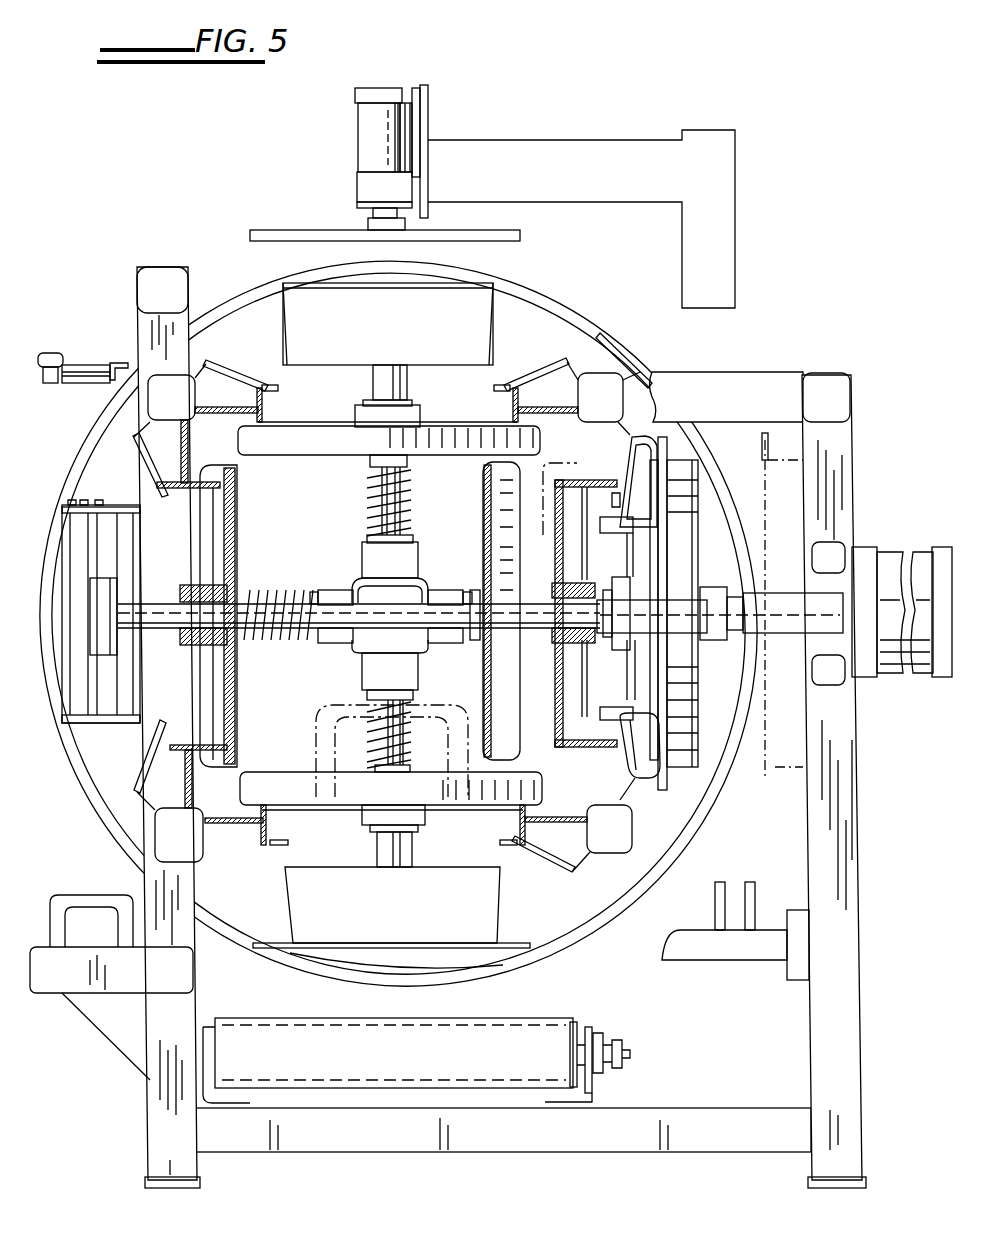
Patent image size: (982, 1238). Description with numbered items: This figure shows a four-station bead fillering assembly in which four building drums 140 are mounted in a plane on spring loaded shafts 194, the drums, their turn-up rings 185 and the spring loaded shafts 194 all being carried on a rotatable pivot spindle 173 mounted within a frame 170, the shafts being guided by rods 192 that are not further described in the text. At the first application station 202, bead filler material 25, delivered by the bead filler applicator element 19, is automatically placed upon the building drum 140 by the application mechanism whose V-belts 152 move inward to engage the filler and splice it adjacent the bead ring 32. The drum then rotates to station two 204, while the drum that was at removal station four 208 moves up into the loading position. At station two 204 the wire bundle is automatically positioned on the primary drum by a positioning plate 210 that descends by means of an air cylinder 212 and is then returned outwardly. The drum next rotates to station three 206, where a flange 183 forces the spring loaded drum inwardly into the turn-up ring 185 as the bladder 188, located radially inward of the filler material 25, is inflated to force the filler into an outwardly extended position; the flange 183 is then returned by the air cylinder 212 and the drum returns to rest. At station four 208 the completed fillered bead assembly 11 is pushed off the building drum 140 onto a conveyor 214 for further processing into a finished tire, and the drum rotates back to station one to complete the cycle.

The fillered bead assembly 11 is at (510, 950).
The bead filler applicator element 19 is at (123, 362).
The filler material 25 is at (494, 318).
The bead ring 32 is at (495, 290).
The building drum 140 is at (283, 345).
The V-belts 152 is at (90, 505).
The frame 170 is at (160, 1115).
The pivot spindle 173 is at (418, 556).
The flange 183 is at (630, 433).
The turn-up ring 185 is at (522, 385).
The bladder 188 is at (632, 752).
The guide rods 192 is at (377, 477).
The spring loaded shafts 194 is at (389, 503).
The first application station 202 is at (95, 445).
The station two 204 is at (240, 300).
The station three 206 is at (680, 777).
The removal station four 208 is at (540, 945).
The positioning plate 210 is at (505, 244).
The air cylinder 212 is at (368, 130).
The conveyor 214 is at (535, 1018).